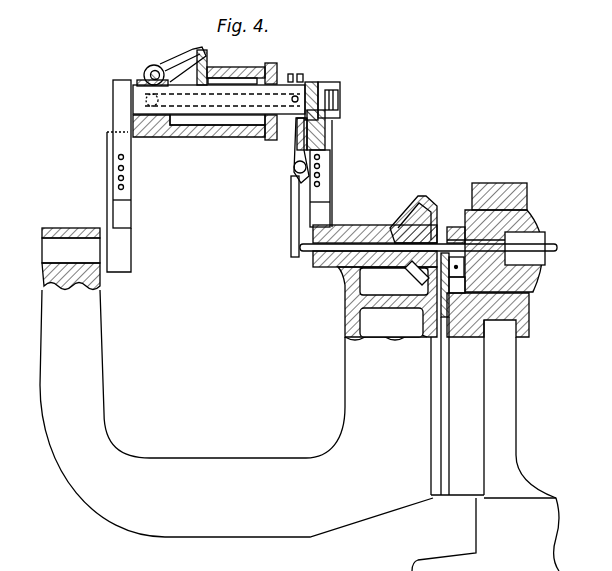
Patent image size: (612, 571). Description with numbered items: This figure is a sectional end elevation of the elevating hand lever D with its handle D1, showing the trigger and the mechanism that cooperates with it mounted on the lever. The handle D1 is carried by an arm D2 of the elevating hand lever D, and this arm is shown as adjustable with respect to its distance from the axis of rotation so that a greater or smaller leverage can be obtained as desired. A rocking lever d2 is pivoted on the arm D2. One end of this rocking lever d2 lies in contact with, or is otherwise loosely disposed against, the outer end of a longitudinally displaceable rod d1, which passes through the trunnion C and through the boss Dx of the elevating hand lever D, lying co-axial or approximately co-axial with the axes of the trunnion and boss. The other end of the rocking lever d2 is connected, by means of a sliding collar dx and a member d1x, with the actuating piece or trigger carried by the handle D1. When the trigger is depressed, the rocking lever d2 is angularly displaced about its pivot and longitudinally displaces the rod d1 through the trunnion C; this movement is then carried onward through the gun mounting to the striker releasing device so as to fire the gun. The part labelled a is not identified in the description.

The hand lever a is at (172, 58).
The member d1x is at (234, 100).
The handle D1 is at (252, 72).
The sliding collar dx is at (293, 82).
The arm D2 is at (308, 154).
The rocking lever d2 is at (298, 190).
The elevating hand lever D is at (318, 215).
The boss Dx is at (357, 240).
The trunnion C is at (508, 220).
The longitudinally displaceable rod d1 is at (536, 243).